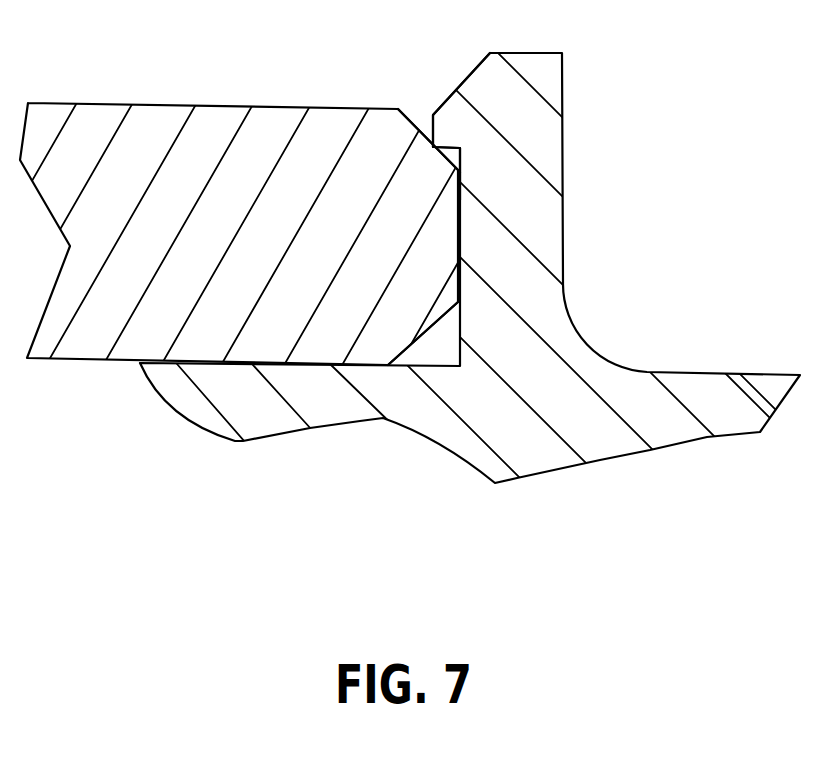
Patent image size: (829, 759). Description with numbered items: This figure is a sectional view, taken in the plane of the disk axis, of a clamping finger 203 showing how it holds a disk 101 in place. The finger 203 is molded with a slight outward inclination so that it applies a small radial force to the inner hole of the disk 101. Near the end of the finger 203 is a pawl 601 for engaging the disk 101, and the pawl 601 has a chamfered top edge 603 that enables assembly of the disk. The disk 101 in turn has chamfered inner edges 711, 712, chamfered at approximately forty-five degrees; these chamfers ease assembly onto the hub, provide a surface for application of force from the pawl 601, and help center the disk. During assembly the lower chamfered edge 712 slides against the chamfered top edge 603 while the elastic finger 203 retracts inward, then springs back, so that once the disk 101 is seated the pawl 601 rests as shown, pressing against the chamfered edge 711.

The disk 101 is at (91, 333).
The clamping finger 203 is at (630, 116).
The pawl 601 is at (463, 110).
The chamfered top edge 603 is at (480, 65).
The chamfered inner edge 711 is at (411, 117).
The chamfered inner edge 712 is at (421, 330).